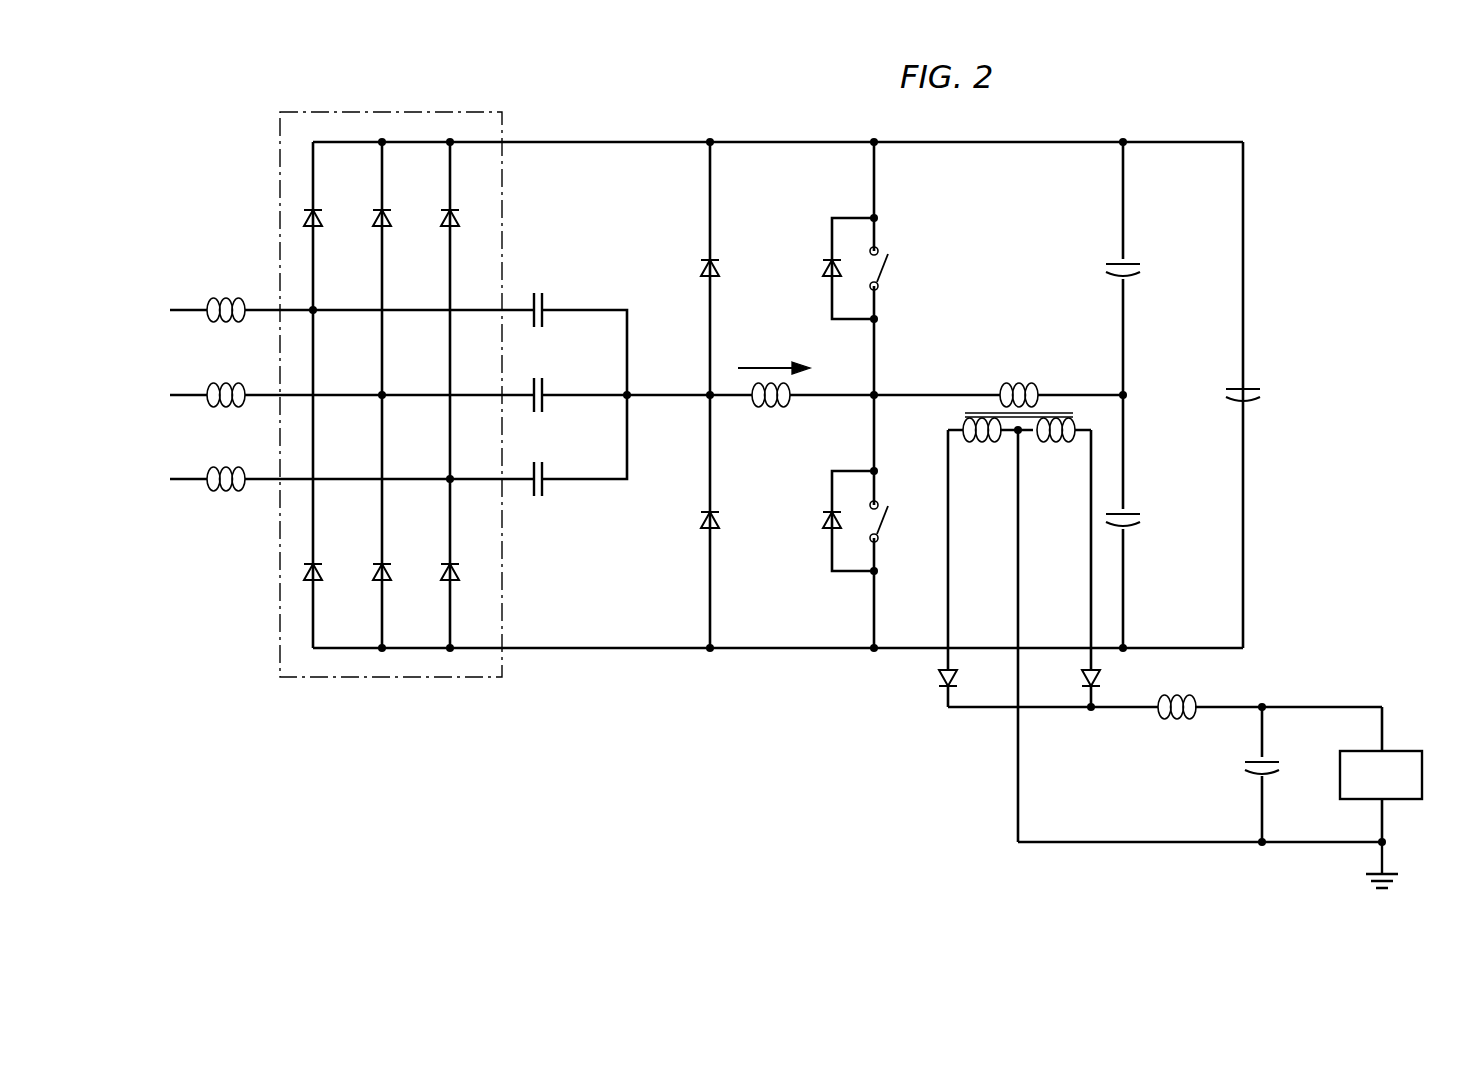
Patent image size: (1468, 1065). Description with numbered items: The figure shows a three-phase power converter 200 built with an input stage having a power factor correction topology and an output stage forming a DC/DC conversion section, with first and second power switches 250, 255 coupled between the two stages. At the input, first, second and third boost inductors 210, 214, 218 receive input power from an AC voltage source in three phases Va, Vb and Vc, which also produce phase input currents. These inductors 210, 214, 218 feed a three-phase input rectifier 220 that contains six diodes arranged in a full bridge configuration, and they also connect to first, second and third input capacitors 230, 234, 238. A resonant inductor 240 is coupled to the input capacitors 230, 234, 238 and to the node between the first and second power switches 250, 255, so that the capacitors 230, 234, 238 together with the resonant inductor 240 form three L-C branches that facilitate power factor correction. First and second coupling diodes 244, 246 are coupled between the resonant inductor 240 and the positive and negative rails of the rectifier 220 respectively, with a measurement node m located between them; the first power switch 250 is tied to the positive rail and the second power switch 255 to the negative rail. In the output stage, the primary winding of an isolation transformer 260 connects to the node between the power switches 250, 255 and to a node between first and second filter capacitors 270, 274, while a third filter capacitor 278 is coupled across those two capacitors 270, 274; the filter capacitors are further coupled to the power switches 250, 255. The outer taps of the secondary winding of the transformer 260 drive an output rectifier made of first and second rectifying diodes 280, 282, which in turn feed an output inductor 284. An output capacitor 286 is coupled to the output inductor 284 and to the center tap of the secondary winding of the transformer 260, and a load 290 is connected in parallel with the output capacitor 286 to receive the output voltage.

The power converter 200 is at (245, 64).
The first boost inductor 210 is at (228, 296).
The second boost inductor 214 is at (228, 381).
The third boost inductor 218 is at (228, 465).
The three-phase input rectifier 220 is at (280, 142).
The first input capacitor 230 is at (546, 303).
The second input capacitor 234 is at (546, 388).
The third input capacitor 238 is at (546, 472).
The resonant inductor 240 is at (771, 412).
The first coupling diode 244 is at (700, 268).
The second coupling diode 246 is at (700, 520).
The first power switch 250 is at (822, 268).
The second power switch 255 is at (822, 520).
The isolation transformer 260 is at (1018, 382).
The first filter capacitor 270 is at (1132, 262).
The second filter capacitor 274 is at (1132, 512).
The third filter capacitor 278 is at (1234, 386).
The first rectifying diode 280 is at (937, 678).
The second rectifying diode 282 is at (1081, 677).
The output inductor 284 is at (1177, 722).
The output capacitor 286 is at (1272, 760).
The load 290 is at (1338, 781).